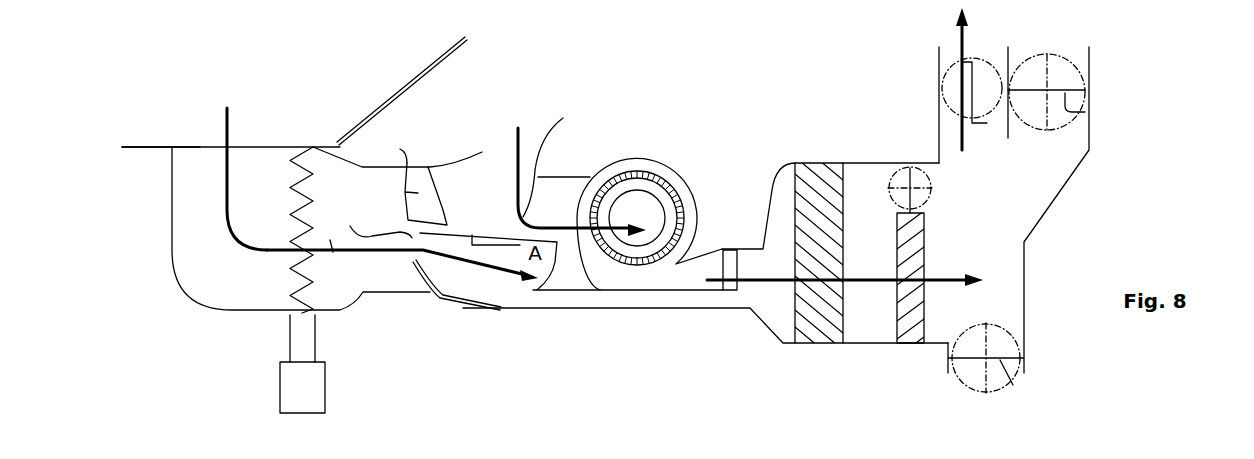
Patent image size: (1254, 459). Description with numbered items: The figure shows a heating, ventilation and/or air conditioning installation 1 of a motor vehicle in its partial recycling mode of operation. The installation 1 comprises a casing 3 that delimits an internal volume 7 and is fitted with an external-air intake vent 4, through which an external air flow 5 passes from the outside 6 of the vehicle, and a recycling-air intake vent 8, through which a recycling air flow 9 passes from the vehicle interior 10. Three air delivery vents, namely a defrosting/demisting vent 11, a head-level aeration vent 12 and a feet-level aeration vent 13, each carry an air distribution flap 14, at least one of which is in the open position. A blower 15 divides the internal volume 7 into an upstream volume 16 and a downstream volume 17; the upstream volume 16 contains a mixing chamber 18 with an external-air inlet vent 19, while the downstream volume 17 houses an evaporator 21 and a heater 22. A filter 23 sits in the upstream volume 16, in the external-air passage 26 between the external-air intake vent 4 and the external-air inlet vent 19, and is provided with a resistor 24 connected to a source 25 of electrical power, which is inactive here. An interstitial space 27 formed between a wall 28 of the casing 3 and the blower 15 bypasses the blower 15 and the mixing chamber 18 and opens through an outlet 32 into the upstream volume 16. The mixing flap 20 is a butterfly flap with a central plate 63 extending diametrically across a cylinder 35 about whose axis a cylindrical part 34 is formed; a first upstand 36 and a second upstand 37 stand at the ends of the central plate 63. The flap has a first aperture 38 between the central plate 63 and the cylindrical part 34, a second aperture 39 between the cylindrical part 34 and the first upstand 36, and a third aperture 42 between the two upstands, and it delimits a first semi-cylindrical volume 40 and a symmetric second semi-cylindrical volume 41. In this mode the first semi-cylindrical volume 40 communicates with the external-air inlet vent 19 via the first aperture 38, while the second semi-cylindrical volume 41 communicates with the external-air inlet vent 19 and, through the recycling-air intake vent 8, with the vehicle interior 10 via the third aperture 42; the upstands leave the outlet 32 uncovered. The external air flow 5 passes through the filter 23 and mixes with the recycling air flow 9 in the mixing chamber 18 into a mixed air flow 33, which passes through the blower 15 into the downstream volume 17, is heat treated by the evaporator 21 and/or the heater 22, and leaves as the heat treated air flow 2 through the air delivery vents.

The heating, ventilation and/or air conditioning installation 1 is at (777, 122).
The heat treated air flow 2 is at (953, 53).
The casing 3 is at (172, 195).
The external-air intake vent 4 is at (198, 145).
The external air flow 5 is at (228, 127).
The outside of the vehicle 6 is at (199, 100).
The internal volume 7 is at (649, 224).
The recycling-air intake vent 8 is at (501, 152).
The recycling air flow 9 is at (527, 135).
The vehicle interior 10 is at (653, 92).
The defrosting/demisting vent 11 is at (968, 370).
The head-level aeration vent 12 is at (982, 48).
The feet-level aeration vent 13 is at (1073, 53).
The air distribution flap 14 is at (975, 105).
The blower 15 is at (726, 226).
The upstream volume 16 is at (363, 253).
The downstream volume 17 is at (870, 248).
The mixing chamber 18 is at (481, 235).
The external-air inlet vent 19 is at (383, 213).
The mixing flap 20 is at (428, 167).
The evaporator 21 is at (820, 160).
The heater 22 is at (923, 257).
The filter 23 is at (315, 202).
The resistor 24 is at (333, 252).
The source of electrical power 25 is at (302, 364).
The external-air passage 26 is at (303, 128).
The interstitial space 27 is at (595, 297).
The wall 28 is at (693, 307).
The outlet 32 is at (540, 303).
The mixed air flow 33 is at (775, 277).
The cylindrical part 34 is at (413, 277).
The cylinder 35 is at (469, 137).
The first upstand 36 is at (558, 290).
The second upstand 37 is at (389, 147).
The first aperture 38 is at (442, 248).
The second aperture 39 is at (503, 303).
The first semi-cylindrical volume 40 is at (465, 280).
The second semi-cylindrical volume 41 is at (478, 176).
The third aperture 42 is at (548, 154).
The central plate 63 is at (538, 177).